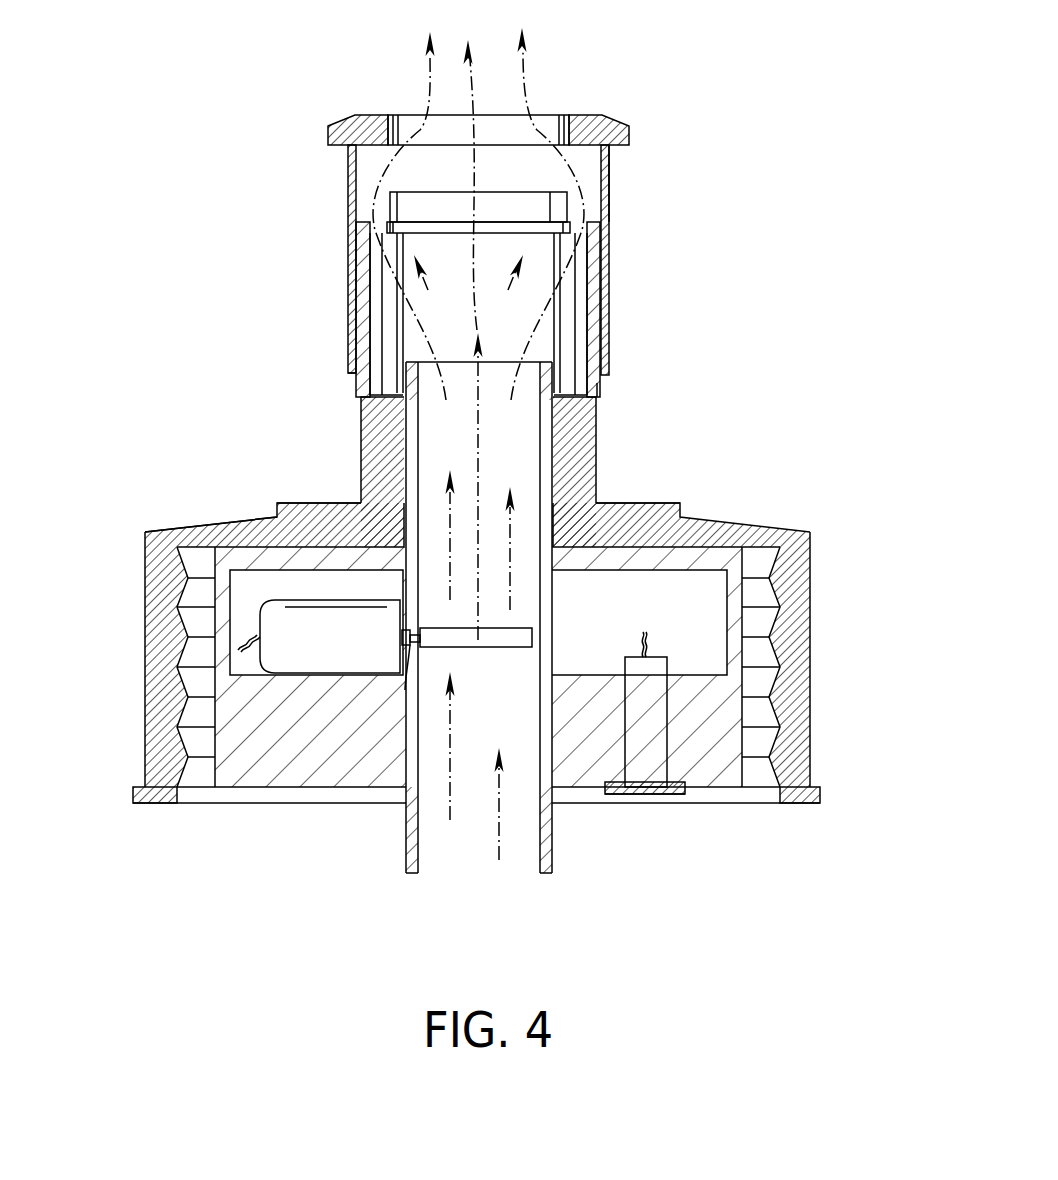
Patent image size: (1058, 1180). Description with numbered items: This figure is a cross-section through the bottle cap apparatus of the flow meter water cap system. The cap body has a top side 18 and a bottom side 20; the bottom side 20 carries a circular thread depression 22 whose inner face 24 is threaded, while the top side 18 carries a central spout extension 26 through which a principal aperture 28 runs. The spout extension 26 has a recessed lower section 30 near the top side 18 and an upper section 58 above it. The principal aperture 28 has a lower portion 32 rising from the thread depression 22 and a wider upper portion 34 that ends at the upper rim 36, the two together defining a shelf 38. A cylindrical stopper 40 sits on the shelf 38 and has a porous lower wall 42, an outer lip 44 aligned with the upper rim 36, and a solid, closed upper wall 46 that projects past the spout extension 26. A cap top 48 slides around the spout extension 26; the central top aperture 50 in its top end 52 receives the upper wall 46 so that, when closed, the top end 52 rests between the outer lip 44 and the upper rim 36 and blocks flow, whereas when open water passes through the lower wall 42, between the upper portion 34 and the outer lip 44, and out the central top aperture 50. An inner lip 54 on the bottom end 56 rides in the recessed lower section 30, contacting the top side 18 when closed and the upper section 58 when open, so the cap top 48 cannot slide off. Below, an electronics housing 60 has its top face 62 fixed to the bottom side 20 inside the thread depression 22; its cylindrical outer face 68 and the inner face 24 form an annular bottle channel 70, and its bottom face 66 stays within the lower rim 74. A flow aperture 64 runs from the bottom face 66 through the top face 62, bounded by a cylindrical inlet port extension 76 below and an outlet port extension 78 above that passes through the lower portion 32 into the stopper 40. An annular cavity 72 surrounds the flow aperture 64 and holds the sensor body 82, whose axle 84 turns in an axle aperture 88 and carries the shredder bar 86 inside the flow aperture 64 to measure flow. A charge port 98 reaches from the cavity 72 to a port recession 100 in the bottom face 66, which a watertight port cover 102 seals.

The top side 18 is at (237, 517).
The bottom side 20 is at (810, 573).
The thread depression 22 is at (750, 675).
The inner face 24 is at (178, 717).
The spout extension 26 is at (596, 430).
The principal aperture 28 is at (608, 300).
The recessed lower section 30 is at (332, 377).
The lower portion 32 is at (340, 528).
The upper portion 34 is at (352, 280).
The upper rim 36 is at (600, 208).
The shelf 38 is at (597, 383).
The cylindrical stopper 40 is at (610, 140).
The porous lower wall 42 is at (523, 295).
The outer lip 44 is at (420, 212).
The upper wall 46 is at (410, 232).
The cap top 48 is at (608, 172).
The central top aperture 50 is at (547, 128).
The top end 52 is at (380, 112).
The inner lip 54 is at (608, 370).
The bottom end 56 is at (340, 370).
The upper section 58 is at (327, 224).
The electronics housing 60 is at (262, 768).
The top face 62 is at (213, 527).
The flow aperture 64 is at (530, 738).
The bottom face 66 is at (312, 787).
The cylindrical outer face 68 is at (187, 645).
The annular bottle channel 70 is at (197, 617).
The annular cavity 72 is at (688, 595).
The lower rim 74 is at (800, 803).
The inlet port extension 76 is at (547, 850).
The outlet port extension 78 is at (596, 455).
The sensor body 82 is at (275, 612).
The axle 84 is at (405, 690).
The shredder bar 86 is at (480, 700).
The axle aperture 88 is at (413, 635).
The charge port 98 is at (643, 677).
The port recession 100 is at (697, 767).
The port cover 102 is at (655, 794).